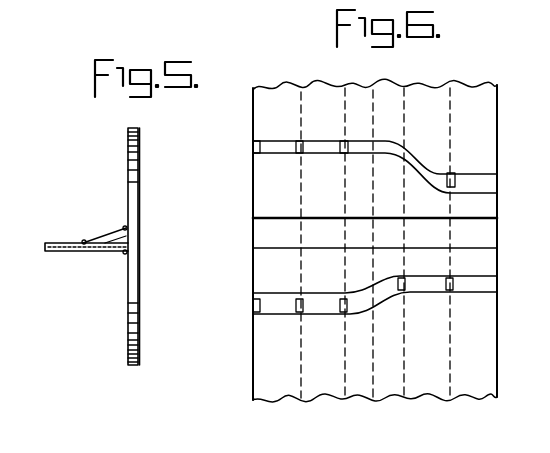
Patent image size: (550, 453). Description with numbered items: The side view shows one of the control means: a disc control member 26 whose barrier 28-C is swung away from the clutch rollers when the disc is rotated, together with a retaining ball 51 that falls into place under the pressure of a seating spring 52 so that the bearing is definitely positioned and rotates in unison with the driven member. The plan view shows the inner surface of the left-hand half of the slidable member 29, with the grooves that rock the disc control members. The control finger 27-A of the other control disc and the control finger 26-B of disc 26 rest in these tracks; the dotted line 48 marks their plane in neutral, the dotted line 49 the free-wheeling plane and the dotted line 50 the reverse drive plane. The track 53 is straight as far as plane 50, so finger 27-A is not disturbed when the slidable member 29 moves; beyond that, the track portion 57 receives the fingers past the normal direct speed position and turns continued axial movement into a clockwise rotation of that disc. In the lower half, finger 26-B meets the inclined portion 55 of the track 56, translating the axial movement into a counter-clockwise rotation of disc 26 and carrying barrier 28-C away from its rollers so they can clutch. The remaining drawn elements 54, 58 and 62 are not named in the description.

In FIG. 5, the disc control member 26 is at (134, 233).
In FIG. 5, the barrier 28-C is at (80, 251).
In FIG. 5, the retaining ball 51 is at (108, 242).
In FIG. 5, the seating spring 52 is at (124, 227).
In FIG. 6, the control finger 27-A is at (260, 147).
In FIG. 6, the slidable member 29 is at (443, 149).
In FIG. 6, the track portion 57 is at (480, 185).
In FIG. 6, the center rail 62 is at (485, 236).
In FIG. 6, the track 56 is at (485, 284).
In FIG. 6, the control finger 26-B is at (257, 314).
In FIG. 6, the dotted line 48 is at (343, 197).
In FIG. 6, the dotted line 49 is at (375, 197).
In FIG. 6, the dotted line 50 is at (402, 199).
In FIG. 6, the track 53 is at (312, 147).
In FIG. 6, the band segment 58 is at (362, 148).
In FIG. 6, the lower band segment 54 is at (318, 305).
In FIG. 6, the inclined portion 55 is at (363, 298).